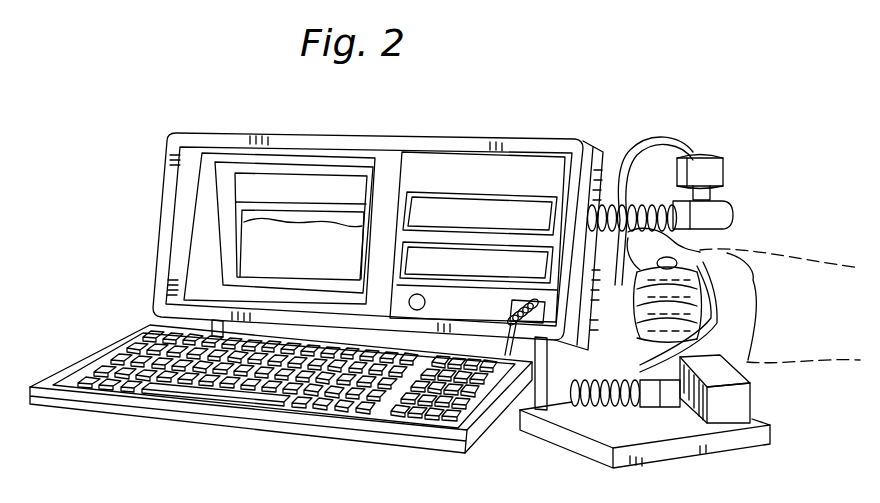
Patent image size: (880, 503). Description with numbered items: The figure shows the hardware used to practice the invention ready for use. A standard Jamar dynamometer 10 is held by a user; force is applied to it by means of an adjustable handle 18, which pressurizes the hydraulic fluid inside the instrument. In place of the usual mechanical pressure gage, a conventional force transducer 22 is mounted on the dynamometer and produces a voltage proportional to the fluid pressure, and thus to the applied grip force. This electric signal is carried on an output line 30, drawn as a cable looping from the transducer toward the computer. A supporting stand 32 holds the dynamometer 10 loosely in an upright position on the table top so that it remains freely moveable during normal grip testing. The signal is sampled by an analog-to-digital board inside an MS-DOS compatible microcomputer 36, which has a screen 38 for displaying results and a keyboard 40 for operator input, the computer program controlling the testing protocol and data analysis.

The Jamar dynamometer 10 is at (750, 207).
The adjustable handle 18 is at (659, 317).
The force transducer 22 is at (723, 153).
The output line 30 is at (657, 143).
The supporting stand 32 is at (737, 404).
The microcomputer 36 is at (190, 147).
The screen 38 is at (355, 180).
The keyboard 40 is at (453, 448).